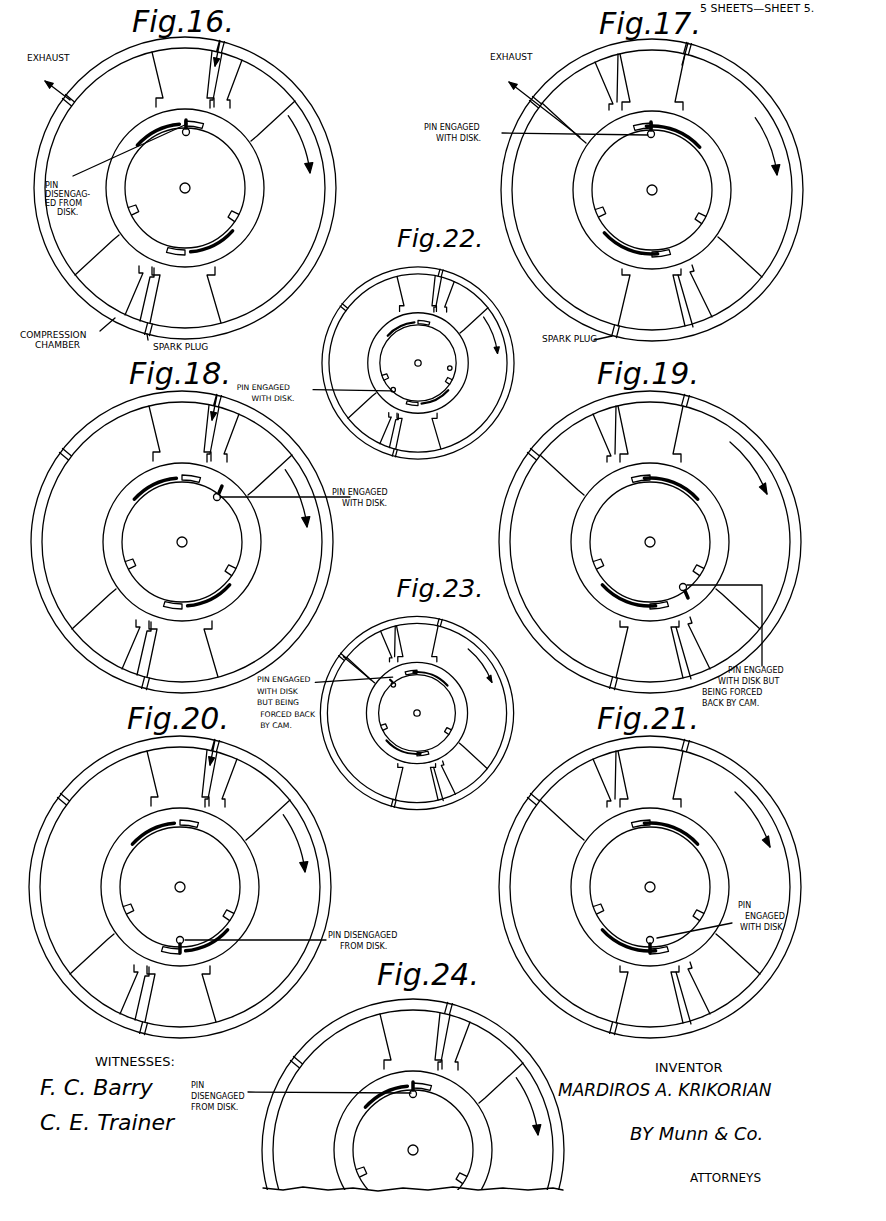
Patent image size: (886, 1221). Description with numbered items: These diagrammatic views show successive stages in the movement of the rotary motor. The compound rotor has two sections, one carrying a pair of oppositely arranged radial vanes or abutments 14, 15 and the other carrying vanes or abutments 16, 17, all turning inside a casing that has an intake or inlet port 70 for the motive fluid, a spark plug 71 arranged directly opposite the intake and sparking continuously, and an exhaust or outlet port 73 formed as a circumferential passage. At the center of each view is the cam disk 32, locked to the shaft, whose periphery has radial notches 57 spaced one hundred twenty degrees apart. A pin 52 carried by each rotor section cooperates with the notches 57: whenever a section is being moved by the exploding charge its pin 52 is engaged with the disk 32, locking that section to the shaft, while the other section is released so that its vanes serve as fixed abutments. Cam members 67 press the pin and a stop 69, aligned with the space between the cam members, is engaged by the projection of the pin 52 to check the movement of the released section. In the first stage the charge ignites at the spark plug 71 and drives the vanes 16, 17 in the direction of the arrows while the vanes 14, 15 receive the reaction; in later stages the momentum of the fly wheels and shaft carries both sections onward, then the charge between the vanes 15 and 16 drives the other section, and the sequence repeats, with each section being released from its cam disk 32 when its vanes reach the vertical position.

In FIG. 16, the vane or abutment 14 is at (183, 79).
In FIG. 17, the vane or abutment 14 is at (652, 82).
In FIG. 18, the vane or abutment 14 is at (267, 467).
In FIG. 19, the vane or abutment 14 is at (734, 616).
In FIG. 20, the vane or abutment 14 is at (180, 994).
In FIG. 21, the vane or abutment 14 is at (649, 994).
In FIG. 22, the vane or abutment 14 is at (363, 410).
In FIG. 23, the vane or abutment 14 is at (363, 664).
In FIG. 24, the vane or abutment 14 is at (411, 1041).
In FIG. 16, the vane or abutment 15 is at (185, 295).
In FIG. 17, the vane or abutment 15 is at (651, 297).
In FIG. 18, the vane or abutment 15 is at (96, 614).
In FIG. 19, the vane or abutment 15 is at (565, 467).
In FIG. 20, the vane or abutment 15 is at (178, 778).
In FIG. 21, the vane or abutment 15 is at (650, 779).
In FIG. 22, the vane or abutment 15 is at (472, 313).
In FIG. 23, the vane or abutment 15 is at (470, 761).
In FIG. 16, the vane or abutment 16 is at (288, 100).
In FIG. 17, the vane or abutment 16 is at (740, 265).
In FIG. 18, the vane or abutment 16 is at (182, 649).
In FIG. 19, the vane or abutment 16 is at (649, 649).
In FIG. 20, the vane or abutment 16 is at (96, 960).
In FIG. 21, the vane or abutment 16 is at (566, 812).
In FIG. 22, the vane or abutment 16 is at (416, 294).
In FIG. 23, the vane or abutment 16 is at (418, 644).
In FIG. 24, the vane or abutment 16 is at (496, 1075).
In FIG. 16, the vane or abutment 17 is at (82, 275).
In FIG. 17, the vane or abutment 17 is at (568, 115).
In FIG. 18, the vane or abutment 17 is at (180, 433).
In FIG. 19, the vane or abutment 17 is at (650, 434).
In FIG. 20, the vane or abutment 17 is at (264, 811).
In FIG. 21, the vane or abutment 17 is at (734, 961).
In FIG. 22, the vane or abutment 17 is at (418, 431).
In FIG. 23, the vane or abutment 17 is at (416, 782).
In FIG. 16, the cam disk 32 is at (216, 188).
In FIG. 17, the cam disk 32 is at (683, 190).
In FIG. 18, the cam disk 32 is at (211, 542).
In FIG. 19, the cam disk 32 is at (679, 542).
In FIG. 20, the cam disk 32 is at (209, 887).
In FIG. 21, the cam disk 32 is at (682, 887).
In FIG. 22, the cam disk 32 is at (418, 363).
In FIG. 23, the cam disk 32 is at (438, 713).
In FIG. 24, the cam disk 32 is at (442, 1150).
In FIG. 16, the pin 52 is at (197, 144).
In FIG. 17, the pin 52 is at (636, 144).
In FIG. 18, the pin 52 is at (210, 507).
In FIG. 19, the pin 52 is at (673, 580).
In FIG. 20, the pin 52 is at (189, 933).
In FIG. 21, the pin 52 is at (660, 931).
In FIG. 22, the pin 52 is at (444, 377).
In FIG. 23, the pin 52 is at (398, 695).
In FIG. 24, the pin 52 is at (410, 1103).
In FIG. 16, the radial notch 57 is at (183, 202).
In FIG. 17, the radial notch 57 is at (650, 180).
In FIG. 18, the radial notch 57 is at (210, 540).
In FIG. 19, the radial notch 57 is at (648, 547).
In FIG. 20, the radial notch 57 is at (178, 890).
In FIG. 21, the radial notch 57 is at (648, 895).
In FIG. 22, the radial notch 57 is at (416, 369).
In FIG. 23, the radial notch 57 is at (416, 716).
In FIG. 24, the radial notch 57 is at (411, 1139).
In FIG. 16, the cam member 67 is at (190, 180).
In FIG. 17, the cam member 67 is at (651, 190).
In FIG. 18, the cam member 67 is at (164, 554).
In FIG. 19, the cam member 67 is at (651, 542).
In FIG. 20, the cam member 67 is at (174, 888).
In FIG. 21, the cam member 67 is at (649, 889).
In FIG. 22, the cam member 67 is at (411, 371).
In FIG. 23, the cam member 67 is at (413, 713).
In FIG. 24, the cam member 67 is at (356, 1107).
In FIG. 16, the stop 69 is at (181, 190).
In FIG. 17, the stop 69 is at (646, 185).
In FIG. 18, the stop 69 is at (149, 524).
In FIG. 19, the stop 69 is at (643, 535).
In FIG. 20, the stop 69 is at (156, 879).
In FIG. 21, the stop 69 is at (644, 880).
In FIG. 22, the stop 69 is at (396, 350).
In FIG. 23, the stop 69 is at (409, 710).
In FIG. 24, the stop 69 is at (443, 1078).
In FIG. 16, the intake or inlet port 70 is at (245, 47).
In FIG. 17, the intake or inlet port 70 is at (718, 49).
In FIG. 18, the intake or inlet port 70 is at (224, 395).
In FIG. 19, the intake or inlet port 70 is at (710, 391).
In FIG. 20, the intake or inlet port 70 is at (233, 747).
In FIG. 21, the intake or inlet port 70 is at (710, 740).
In FIG. 22, the intake or inlet port 70 is at (440, 273).
In FIG. 23, the intake or inlet port 70 is at (458, 617).
In FIG. 24, the intake or inlet port 70 is at (472, 1002).
In FIG. 16, the spark plug 71 is at (128, 341).
In FIG. 17, the spark plug 71 is at (605, 314).
In FIG. 18, the spark plug 71 is at (124, 689).
In FIG. 19, the spark plug 71 is at (603, 668).
In FIG. 20, the spark plug 71 is at (123, 1033).
In FIG. 21, the spark plug 71 is at (601, 1013).
In FIG. 22, the spark plug 71 is at (398, 465).
In FIG. 23, the spark plug 71 is at (382, 788).
In FIG. 16, the exhaust or outlet port 73 is at (50, 98).
In FIG. 17, the exhaust or outlet port 73 is at (533, 109).
In FIG. 18, the exhaust or outlet port 73 is at (47, 457).
In FIG. 19, the exhaust or outlet port 73 is at (513, 455).
In FIG. 20, the exhaust or outlet port 73 is at (48, 792).
In FIG. 21, the exhaust or outlet port 73 is at (530, 785).
In FIG. 22, the exhaust or outlet port 73 is at (333, 300).
In FIG. 23, the exhaust or outlet port 73 is at (340, 662).
In FIG. 24, the exhaust or outlet port 73 is at (284, 1049).